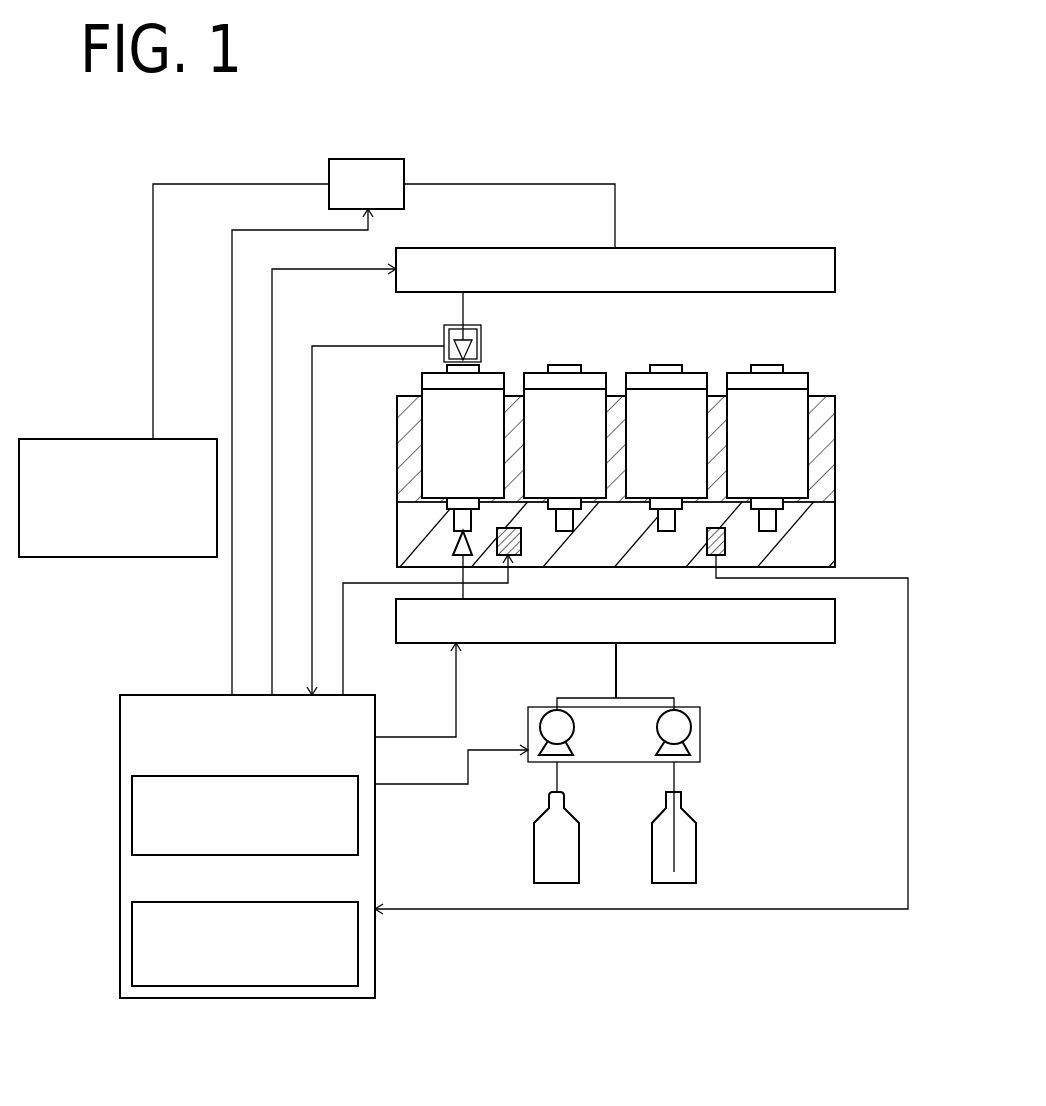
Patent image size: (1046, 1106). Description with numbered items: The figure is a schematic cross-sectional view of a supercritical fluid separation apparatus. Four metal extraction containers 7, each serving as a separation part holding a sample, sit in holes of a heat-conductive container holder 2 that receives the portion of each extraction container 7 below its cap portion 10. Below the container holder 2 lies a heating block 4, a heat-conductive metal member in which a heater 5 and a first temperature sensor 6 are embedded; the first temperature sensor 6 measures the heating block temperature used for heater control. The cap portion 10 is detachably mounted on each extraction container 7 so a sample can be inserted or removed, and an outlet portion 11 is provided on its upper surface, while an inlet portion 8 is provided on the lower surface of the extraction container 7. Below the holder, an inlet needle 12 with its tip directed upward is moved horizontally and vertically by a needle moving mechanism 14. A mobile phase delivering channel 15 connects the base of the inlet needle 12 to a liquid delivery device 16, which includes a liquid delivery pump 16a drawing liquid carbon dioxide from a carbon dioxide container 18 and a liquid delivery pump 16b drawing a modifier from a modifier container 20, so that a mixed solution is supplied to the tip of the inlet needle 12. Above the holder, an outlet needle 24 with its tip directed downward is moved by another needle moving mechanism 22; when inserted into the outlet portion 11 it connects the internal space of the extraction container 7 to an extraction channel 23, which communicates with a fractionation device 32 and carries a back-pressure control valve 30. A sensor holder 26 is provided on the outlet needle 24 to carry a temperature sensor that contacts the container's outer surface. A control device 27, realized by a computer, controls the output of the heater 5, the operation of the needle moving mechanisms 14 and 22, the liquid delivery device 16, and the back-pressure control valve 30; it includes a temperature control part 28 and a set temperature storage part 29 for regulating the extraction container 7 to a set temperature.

The container holder 2 is at (607, 481).
The heating block 4 is at (837, 524).
The heater 5 is at (498, 556).
The first temperature sensor 6 is at (724, 547).
The extraction container 7 is at (797, 418).
The inlet portion 8 is at (458, 520).
The cap portion 10 is at (797, 382).
The outlet portion 11 is at (768, 367).
The inlet needle 12 is at (458, 541).
The needle moving mechanism 14 is at (838, 623).
The mobile phase delivering channel 15 is at (618, 670).
The liquid delivery device 16 is at (613, 740).
The liquid delivery pump 16a is at (540, 727).
The liquid delivery pump 16b is at (692, 727).
The carbon dioxide container 18 is at (532, 836).
The modifier container 20 is at (697, 836).
The needle moving mechanism 22 is at (786, 247).
The extraction channel 23 is at (618, 200).
The outlet needle 24 is at (482, 347).
The sensor holder 26 is at (482, 333).
The control device 27 is at (273, 827).
The temperature control part 28 is at (302, 775).
The set temperature storage part 29 is at (302, 901).
The back-pressure control valve 30 is at (405, 160).
The fractionation device 32 is at (118, 437).